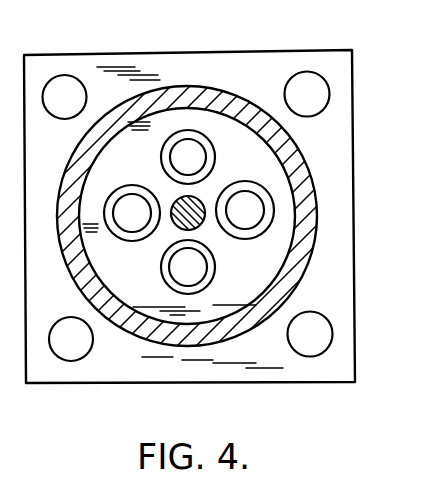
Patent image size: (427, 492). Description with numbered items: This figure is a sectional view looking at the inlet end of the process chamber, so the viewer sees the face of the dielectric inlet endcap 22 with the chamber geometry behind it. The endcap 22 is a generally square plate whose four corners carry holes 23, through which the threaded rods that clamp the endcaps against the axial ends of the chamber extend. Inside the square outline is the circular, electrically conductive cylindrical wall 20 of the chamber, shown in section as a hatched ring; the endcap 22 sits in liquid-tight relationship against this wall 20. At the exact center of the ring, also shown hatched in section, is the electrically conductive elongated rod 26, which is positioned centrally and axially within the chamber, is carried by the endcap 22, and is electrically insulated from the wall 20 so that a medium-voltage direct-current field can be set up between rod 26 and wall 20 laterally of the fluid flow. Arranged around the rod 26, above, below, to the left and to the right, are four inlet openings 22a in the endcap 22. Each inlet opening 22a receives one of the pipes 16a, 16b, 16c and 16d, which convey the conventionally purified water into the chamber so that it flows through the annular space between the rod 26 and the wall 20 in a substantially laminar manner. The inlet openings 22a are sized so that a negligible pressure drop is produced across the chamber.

The pipe 16a is at (138, 186).
The pipe 16b is at (162, 150).
The pipe 16c is at (248, 185).
The pipe 16d is at (170, 286).
The cylindrical wall 20 is at (296, 195).
The inlet endcap 22 is at (217, 124).
The inlet openings 22a is at (182, 160).
The holes 23 is at (71, 79).
The rod 26 is at (194, 220).